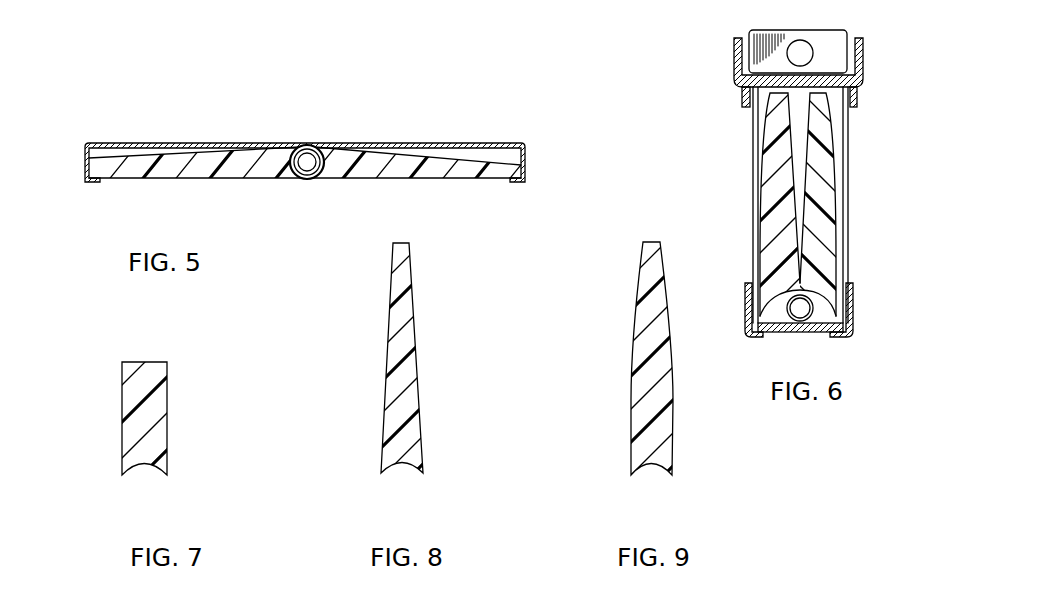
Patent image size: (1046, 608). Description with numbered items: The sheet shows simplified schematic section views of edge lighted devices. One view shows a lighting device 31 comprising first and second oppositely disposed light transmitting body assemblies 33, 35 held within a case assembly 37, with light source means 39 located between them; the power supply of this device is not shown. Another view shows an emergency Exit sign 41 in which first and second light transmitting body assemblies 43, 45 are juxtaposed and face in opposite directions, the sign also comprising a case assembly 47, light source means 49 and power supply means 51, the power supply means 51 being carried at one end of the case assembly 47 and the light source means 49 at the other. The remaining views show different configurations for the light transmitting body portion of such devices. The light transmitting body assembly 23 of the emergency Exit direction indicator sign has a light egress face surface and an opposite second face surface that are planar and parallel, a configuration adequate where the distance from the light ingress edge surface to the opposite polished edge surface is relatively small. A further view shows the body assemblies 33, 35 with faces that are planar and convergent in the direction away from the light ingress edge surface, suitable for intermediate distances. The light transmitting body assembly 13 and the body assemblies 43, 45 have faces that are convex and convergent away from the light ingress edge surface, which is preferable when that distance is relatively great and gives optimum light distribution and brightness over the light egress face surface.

In FIG. 9, the light transmitting body assembly 13 is at (589, 371).
In FIG. 7, the light transmitting body assembly 23 is at (122, 402).
In FIG. 5, the lighting device 31 is at (311, 161).
In FIG. 5, the first light transmitting body assembly 33 is at (234, 180).
In FIG. 8, the first light transmitting body assembly 33 is at (348, 376).
In FIG. 5, the second light transmitting body assembly 35 is at (398, 180).
In FIG. 8, the second light transmitting body assembly 35 is at (383, 398).
In FIG. 5, the case assembly 37 is at (193, 143).
In FIG. 5, the light source means 39 is at (307, 180).
In FIG. 6, the emergency Exit sign 41 is at (802, 189).
In FIG. 6, the first light transmitting body assembly 43 is at (764, 137).
In FIG. 9, the first light transmitting body assembly 43 is at (606, 371).
In FIG. 6, the second light transmitting body assembly 45 is at (834, 155).
In FIG. 9, the second light transmitting body assembly 45 is at (632, 400).
In FIG. 6, the case assembly 47 is at (863, 63).
In FIG. 6, the light source means 49 is at (853, 318).
In FIG. 6, the power supply means 51 is at (848, 34).